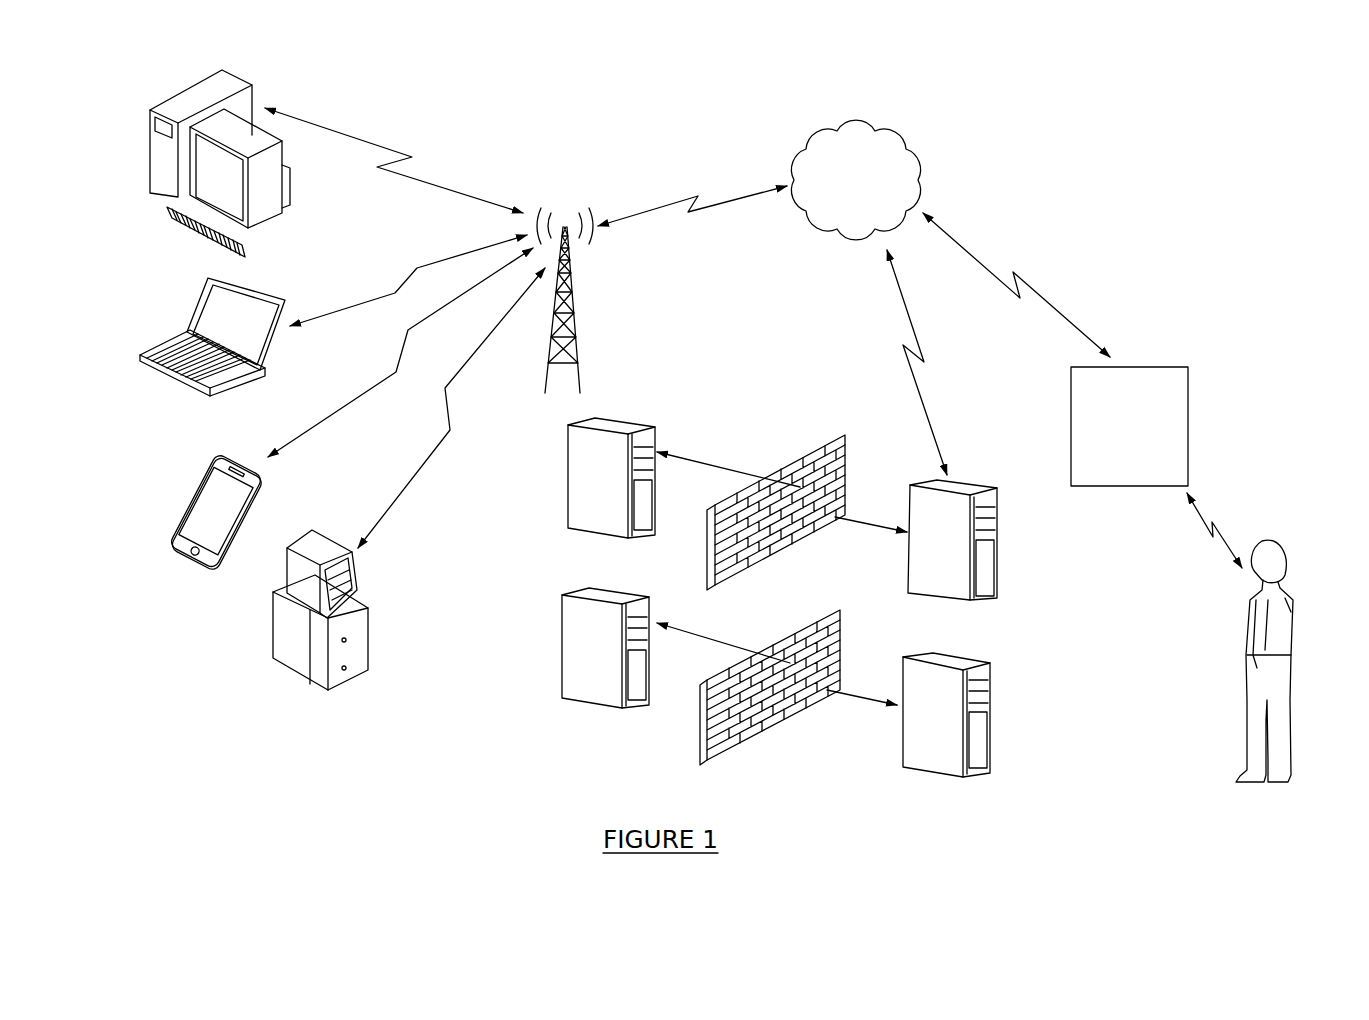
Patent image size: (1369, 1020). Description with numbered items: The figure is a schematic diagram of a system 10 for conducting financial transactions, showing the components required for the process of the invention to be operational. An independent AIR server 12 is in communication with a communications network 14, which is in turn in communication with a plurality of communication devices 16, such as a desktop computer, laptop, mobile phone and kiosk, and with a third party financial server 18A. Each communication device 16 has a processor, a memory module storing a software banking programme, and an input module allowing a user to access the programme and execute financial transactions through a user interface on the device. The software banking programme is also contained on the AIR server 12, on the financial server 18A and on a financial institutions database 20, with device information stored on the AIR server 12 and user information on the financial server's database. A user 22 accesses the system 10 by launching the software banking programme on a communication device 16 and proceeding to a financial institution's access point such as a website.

The system for conducting financial transactions 10 is at (1150, 168).
The AIR server 12 is at (1116, 441).
The communications network 14 is at (845, 193).
The communication devices 16 is at (149, 147).
The financial server 18A is at (908, 562).
The financial institutions database 20 is at (598, 537).
The user 22 is at (1287, 577).